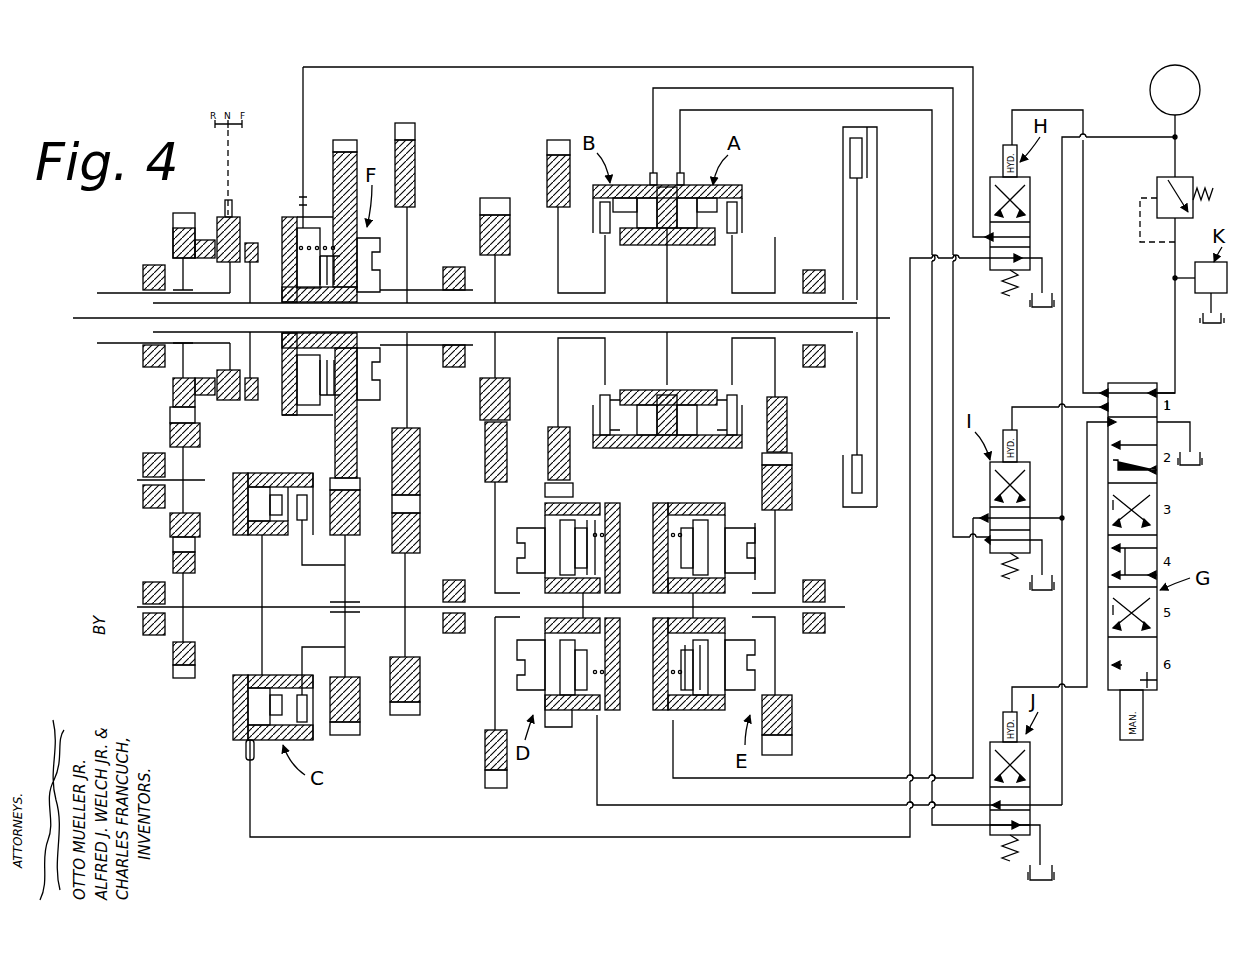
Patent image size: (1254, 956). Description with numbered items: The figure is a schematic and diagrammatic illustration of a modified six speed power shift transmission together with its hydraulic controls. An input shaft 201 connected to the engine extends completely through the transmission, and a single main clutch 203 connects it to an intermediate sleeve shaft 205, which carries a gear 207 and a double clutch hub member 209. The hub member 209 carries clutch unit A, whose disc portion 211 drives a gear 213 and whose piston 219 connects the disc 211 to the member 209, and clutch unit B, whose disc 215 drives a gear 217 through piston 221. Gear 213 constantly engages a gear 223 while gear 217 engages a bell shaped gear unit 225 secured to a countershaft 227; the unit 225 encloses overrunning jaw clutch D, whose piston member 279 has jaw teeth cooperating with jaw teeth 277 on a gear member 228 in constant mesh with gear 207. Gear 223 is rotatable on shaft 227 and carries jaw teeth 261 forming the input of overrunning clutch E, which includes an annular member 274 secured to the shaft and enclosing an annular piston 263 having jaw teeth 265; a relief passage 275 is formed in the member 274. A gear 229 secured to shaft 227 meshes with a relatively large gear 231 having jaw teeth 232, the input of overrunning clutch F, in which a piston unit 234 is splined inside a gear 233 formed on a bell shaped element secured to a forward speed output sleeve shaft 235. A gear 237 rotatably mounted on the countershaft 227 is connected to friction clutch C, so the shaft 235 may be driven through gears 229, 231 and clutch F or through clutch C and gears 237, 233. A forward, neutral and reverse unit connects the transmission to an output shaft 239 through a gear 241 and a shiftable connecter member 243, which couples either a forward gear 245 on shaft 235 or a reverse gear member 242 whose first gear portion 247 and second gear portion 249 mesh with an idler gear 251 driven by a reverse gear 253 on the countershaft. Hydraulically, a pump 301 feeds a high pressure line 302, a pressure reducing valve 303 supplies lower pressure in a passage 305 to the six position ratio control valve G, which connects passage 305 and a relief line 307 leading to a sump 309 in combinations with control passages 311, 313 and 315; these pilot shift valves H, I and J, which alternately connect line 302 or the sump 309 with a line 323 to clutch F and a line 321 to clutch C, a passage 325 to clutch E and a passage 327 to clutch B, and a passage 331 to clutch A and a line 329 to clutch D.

The input shaft 201 is at (97, 303).
The main clutch 203 is at (862, 158).
The intermediate sleeve shaft 205 is at (695, 303).
The gear 207 is at (495, 198).
The double clutch hub member 209 is at (637, 185).
The disc portion 211 is at (735, 395).
The gear 213 is at (787, 417).
The disc 215 is at (602, 395).
The gear 217 is at (557, 458).
The piston 219 is at (692, 405).
The piston 221 is at (645, 405).
The gear 223 is at (792, 482).
The gear unit 225 is at (570, 508).
The countershaft 227 is at (482, 613).
The gear member 228 is at (490, 458).
The gear 229 is at (420, 540).
The gear 231 is at (420, 460).
The jaw teeth 232 is at (367, 413).
The gear 233 is at (345, 140).
The piston unit 234 is at (310, 405).
The forward speed output sleeve shaft 235 is at (270, 290).
The gear 237 is at (348, 530).
The output shaft 239 is at (120, 343).
The gear 241 is at (220, 240).
The reverse gear member 242 is at (173, 392).
The connecter member 243 is at (232, 213).
The forward gear 245 is at (250, 400).
The first gear portion 247 is at (210, 390).
The second gear portion 249 is at (170, 415).
The idler gear 251 is at (171, 436).
The reverse gear 253 is at (200, 563).
The jaw teeth 261 is at (740, 528).
The annular piston 263 is at (740, 690).
The jaw teeth 265 is at (690, 520).
The annular member 274 is at (660, 710).
The relief passage 275 is at (692, 710).
The jaw teeth 277 is at (527, 547).
The piston member 279 is at (575, 653).
The pump 301 is at (1190, 110).
The pressure line 302 is at (1132, 137).
The pressure reducing valve 303 is at (1173, 180).
The passage 305 is at (1175, 307).
The relief line 307 is at (1175, 407).
The sump 309 is at (1042, 310).
The shift valve control passage 311 is at (1093, 390).
The control line 313 is at (1040, 407).
The control line 315 is at (1085, 426).
The line 321 is at (910, 258).
The line 323 is at (303, 110).
The pressure passage 325 is at (973, 620).
The pressure passage 327 is at (653, 98).
The pressure line 329 is at (597, 785).
The pressure passage 331 is at (777, 110).